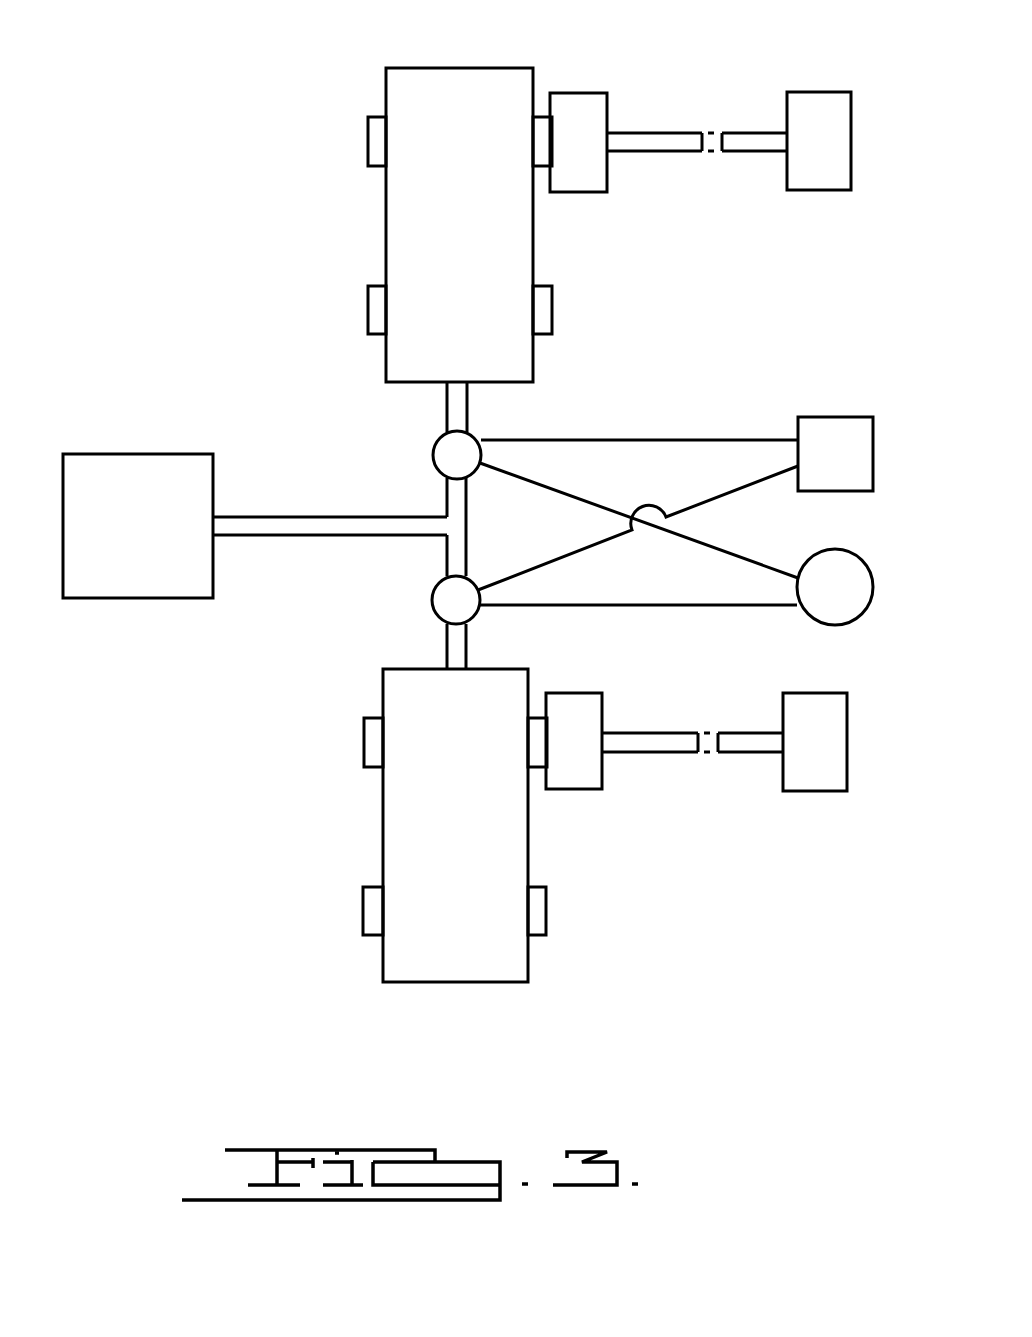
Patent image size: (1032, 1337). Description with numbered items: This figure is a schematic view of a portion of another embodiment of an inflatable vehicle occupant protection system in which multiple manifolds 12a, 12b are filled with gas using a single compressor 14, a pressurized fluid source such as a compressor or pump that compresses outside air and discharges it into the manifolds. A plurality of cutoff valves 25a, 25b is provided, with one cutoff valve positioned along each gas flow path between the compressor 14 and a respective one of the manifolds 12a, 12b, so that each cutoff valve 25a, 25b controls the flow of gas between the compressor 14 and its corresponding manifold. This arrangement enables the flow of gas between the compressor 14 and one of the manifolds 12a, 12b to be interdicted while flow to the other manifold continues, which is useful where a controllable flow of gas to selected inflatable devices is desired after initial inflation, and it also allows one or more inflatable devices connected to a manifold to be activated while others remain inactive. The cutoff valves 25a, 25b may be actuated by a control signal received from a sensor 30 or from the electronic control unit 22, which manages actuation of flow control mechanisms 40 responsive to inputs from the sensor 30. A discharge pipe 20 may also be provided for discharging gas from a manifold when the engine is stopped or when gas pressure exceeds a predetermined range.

The manifold 12a is at (475, 97).
The manifold 12b is at (473, 967).
The pressurized fluid source 14 is at (118, 572).
The discharge pipe 20 is at (457, 402).
The electronic control unit 22 is at (838, 433).
The cutoff valve 25a is at (432, 462).
The cutoff valve 25b is at (432, 607).
The sensor 30 is at (858, 605).
The flow control mechanism 40 is at (597, 105).